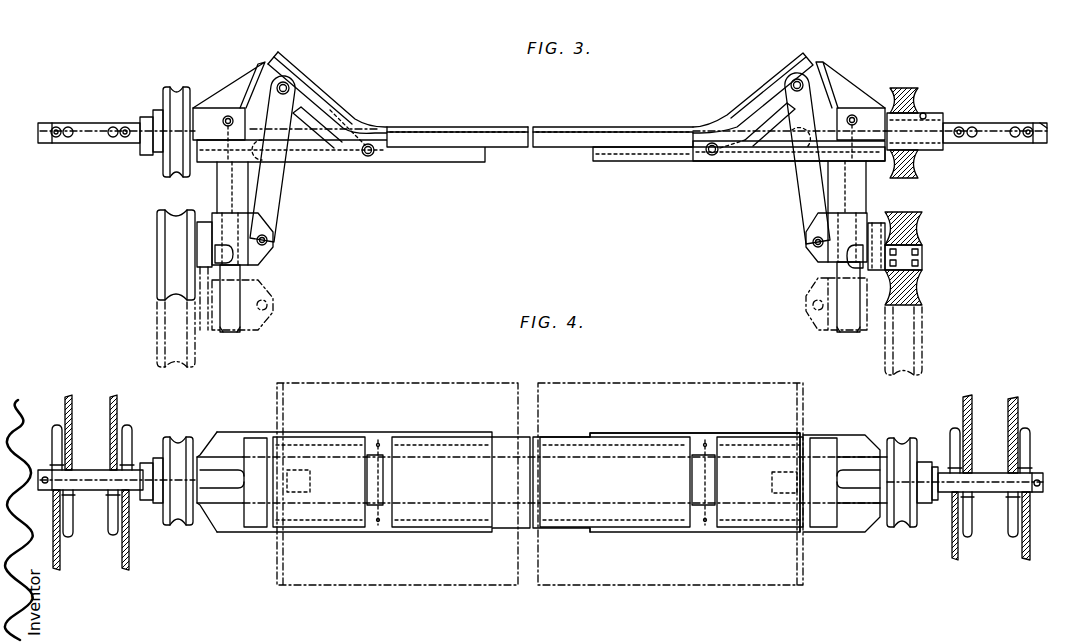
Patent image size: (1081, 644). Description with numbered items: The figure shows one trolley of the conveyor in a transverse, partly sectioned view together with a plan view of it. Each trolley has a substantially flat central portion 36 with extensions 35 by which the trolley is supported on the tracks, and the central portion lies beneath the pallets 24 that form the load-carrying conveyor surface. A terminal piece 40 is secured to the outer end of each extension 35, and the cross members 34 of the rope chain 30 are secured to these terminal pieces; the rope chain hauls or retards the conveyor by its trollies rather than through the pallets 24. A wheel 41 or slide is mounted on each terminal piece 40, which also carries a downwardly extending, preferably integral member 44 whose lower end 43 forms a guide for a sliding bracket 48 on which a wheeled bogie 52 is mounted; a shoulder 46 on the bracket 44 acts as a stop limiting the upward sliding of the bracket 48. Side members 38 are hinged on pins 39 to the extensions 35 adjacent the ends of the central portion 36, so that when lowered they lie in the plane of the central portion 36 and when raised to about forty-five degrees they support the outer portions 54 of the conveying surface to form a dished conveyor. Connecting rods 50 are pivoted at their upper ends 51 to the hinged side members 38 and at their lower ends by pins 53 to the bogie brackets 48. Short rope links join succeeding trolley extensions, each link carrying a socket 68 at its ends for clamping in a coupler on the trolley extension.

In FIG. 3, the pallet 24 is at (479, 128).
In FIG. 3, the rope chain 30 is at (975, 143).
In FIG. 4, the rope chain 30 is at (1020, 407).
In FIG. 3, the cross member 34 is at (987, 121).
In FIG. 4, the cross member 34 is at (990, 494).
In FIG. 3, the extension 35 is at (627, 153).
In FIG. 3, the central portion 36 is at (580, 144).
In FIG. 4, the central portion 36 is at (650, 434).
In FIG. 3, the side member 38 is at (757, 117).
In FIG. 4, the side member 38 is at (862, 443).
In FIG. 3, the pin 39 is at (710, 152).
In FIG. 3, the terminal piece 40 is at (843, 92).
In FIG. 3, the wheel 41 is at (907, 92).
In FIG. 3, the lower end 43 is at (850, 318).
In FIG. 3, the downwardly extending member 44 is at (863, 200).
In FIG. 3, the shoulder 46 is at (827, 217).
In FIG. 3, the sliding bracket 48 is at (850, 235).
In FIG. 3, the connecting rod 50 is at (805, 173).
In FIG. 3, the upper end 51 is at (803, 78).
In FIG. 3, the wheeled bogie 52 is at (922, 220).
In FIG. 3, the pin 53 is at (808, 242).
In FIG. 3, the outer portion 54 is at (752, 88).
In FIG. 4, the socket 68 is at (955, 443).